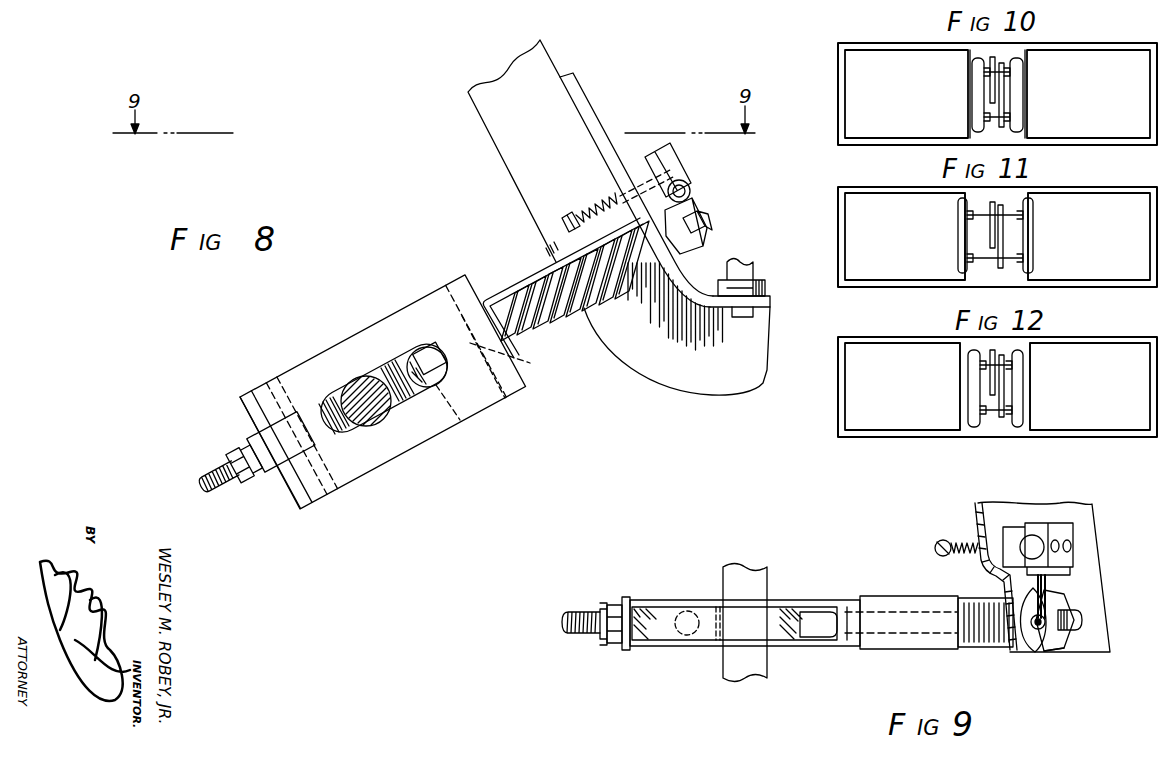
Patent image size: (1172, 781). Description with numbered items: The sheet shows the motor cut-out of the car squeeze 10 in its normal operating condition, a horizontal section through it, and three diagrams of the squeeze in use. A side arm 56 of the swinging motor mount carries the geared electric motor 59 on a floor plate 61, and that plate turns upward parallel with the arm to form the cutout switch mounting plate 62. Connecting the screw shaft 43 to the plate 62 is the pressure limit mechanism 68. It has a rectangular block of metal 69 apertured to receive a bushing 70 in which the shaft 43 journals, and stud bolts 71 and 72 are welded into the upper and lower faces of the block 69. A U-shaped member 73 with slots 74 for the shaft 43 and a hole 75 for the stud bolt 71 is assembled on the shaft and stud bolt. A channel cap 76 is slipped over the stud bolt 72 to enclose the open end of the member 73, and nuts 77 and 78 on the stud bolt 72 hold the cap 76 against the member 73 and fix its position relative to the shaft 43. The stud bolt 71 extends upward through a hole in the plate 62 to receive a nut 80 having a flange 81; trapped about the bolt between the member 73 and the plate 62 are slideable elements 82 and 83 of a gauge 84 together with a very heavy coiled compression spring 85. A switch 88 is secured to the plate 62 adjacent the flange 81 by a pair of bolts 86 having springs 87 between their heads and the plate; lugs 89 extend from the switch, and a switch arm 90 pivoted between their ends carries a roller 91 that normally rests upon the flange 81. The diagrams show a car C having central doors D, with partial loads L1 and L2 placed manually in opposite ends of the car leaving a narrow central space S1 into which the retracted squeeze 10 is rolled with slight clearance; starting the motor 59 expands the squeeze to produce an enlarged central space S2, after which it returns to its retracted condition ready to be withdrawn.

In FIG. 10, the car squeeze 10 is at (1022, 85).
In FIG. 12, the car squeeze 10 is at (1022, 382).
In FIG. 8, the screw shaft 43 is at (362, 380).
In FIG. 9, the screw shaft 43 is at (760, 583).
In FIG. 8, the side arm 56 is at (500, 137).
In FIG. 8, the geared electric motor 59 is at (758, 269).
In FIG. 8, the floor plate 61 is at (770, 297).
In FIG. 8, the cutout switch mounting plate 62 is at (586, 117).
In FIG. 9, the cutout switch mounting plate 62 is at (1048, 508).
In FIG. 8, the pressure limit mechanism 68 is at (432, 235).
In FIG. 9, the pressure limit mechanism 68 is at (798, 531).
In FIG. 8, the rectangular block of metal 69 is at (445, 385).
In FIG. 8, the bushing 70 is at (384, 388).
In FIG. 8, the stud bolt 71 is at (700, 217).
In FIG. 9, the stud bolt 71 is at (1094, 620).
In FIG. 8, the stud bolt 72 is at (218, 477).
In FIG. 9, the stud bolt 72 is at (560, 621).
In FIG. 8, the U-shaped member 73 is at (348, 410).
In FIG. 9, the U-shaped member 73 is at (708, 597).
In FIG. 8, the slots 74 is at (430, 358).
In FIG. 8, the hole 75 is at (473, 330).
In FIG. 8, the channel cap 76 is at (242, 405).
In FIG. 9, the channel cap 76 is at (637, 597).
In FIG. 8, the nut 77 is at (281, 442).
In FIG. 9, the nut 77 is at (612, 640).
In FIG. 8, the nut 78 is at (245, 462).
In FIG. 9, the nut 78 is at (598, 632).
In FIG. 8, the nut 80 is at (702, 237).
In FIG. 9, the nut 80 is at (1066, 613).
In FIG. 8, the flange 81 is at (687, 264).
In FIG. 9, the flange 81 is at (1050, 652).
In FIG. 8, the slideable element 82 is at (515, 283).
In FIG. 9, the slideable element 82 is at (892, 603).
In FIG. 8, the slideable element 83 is at (561, 250).
In FIG. 9, the slideable element 83 is at (983, 603).
In FIG. 8, the gauge 84 is at (539, 252).
In FIG. 9, the gauge 84 is at (918, 576).
In FIG. 8, the coiled compression spring 85 is at (580, 310).
In FIG. 8, the bolts 86 is at (565, 217).
In FIG. 9, the bolts 86 is at (940, 541).
In FIG. 8, the springs 87 is at (591, 206).
In FIG. 9, the springs 87 is at (964, 538).
In FIG. 8, the switch 88 is at (672, 168).
In FIG. 9, the switch 88 is at (1073, 533).
In FIG. 9, the lugs 89 is at (1036, 580).
In FIG. 8, the switch arm 90 is at (690, 186).
In FIG. 9, the switch arm 90 is at (1050, 600).
In FIG. 9, the roller 91 is at (1030, 645).
In FIG. 10, the car C is at (1108, 46).
In FIG. 11, the car C is at (1100, 192).
In FIG. 12, the car C is at (1100, 341).
In FIG. 10, the central doors D is at (970, 48).
In FIG. 11, the central doors D is at (968, 282).
In FIG. 12, the central doors D is at (990, 432).
In FIG. 10, the partial load L1 is at (906, 94).
In FIG. 11, the partial load L1 is at (905, 236).
In FIG. 12, the partial load L1 is at (902, 386).
In FIG. 10, the partial load L2 is at (1088, 94).
In FIG. 11, the partial load L2 is at (1089, 236).
In FIG. 12, the partial load L2 is at (1090, 386).
In FIG. 10, the narrow central space S1 is at (972, 100).
In FIG. 11, the enlarged central space S2 is at (965, 235).
In FIG. 12, the enlarged central space S2 is at (965, 408).